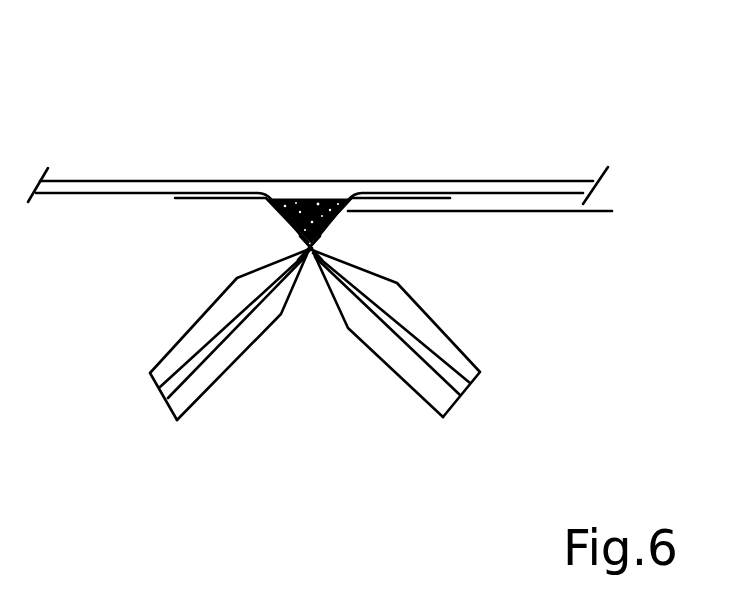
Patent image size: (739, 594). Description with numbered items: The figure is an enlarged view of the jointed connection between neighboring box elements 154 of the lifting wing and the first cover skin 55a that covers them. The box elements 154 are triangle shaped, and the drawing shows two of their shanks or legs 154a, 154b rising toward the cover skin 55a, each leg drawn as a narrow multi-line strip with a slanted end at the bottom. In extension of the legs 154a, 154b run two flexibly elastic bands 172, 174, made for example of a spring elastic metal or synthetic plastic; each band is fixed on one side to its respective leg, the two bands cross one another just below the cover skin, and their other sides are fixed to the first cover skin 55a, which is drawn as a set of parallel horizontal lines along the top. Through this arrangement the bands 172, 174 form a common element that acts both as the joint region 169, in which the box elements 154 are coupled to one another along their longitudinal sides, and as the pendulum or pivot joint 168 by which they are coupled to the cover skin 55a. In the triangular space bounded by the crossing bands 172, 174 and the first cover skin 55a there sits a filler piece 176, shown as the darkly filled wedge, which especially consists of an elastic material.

The first cover skin 55a is at (480, 193).
The flexibly elastic band 172 is at (279, 216).
The flexibly elastic band 174 is at (516, 219).
The filler piece 176 is at (308, 198).
The pendulum or pivot joint 168 is at (376, 237).
The joint region 169 is at (333, 243).
The box element 154 is at (333, 375).
The leg 154a is at (240, 335).
The leg 154b is at (425, 350).